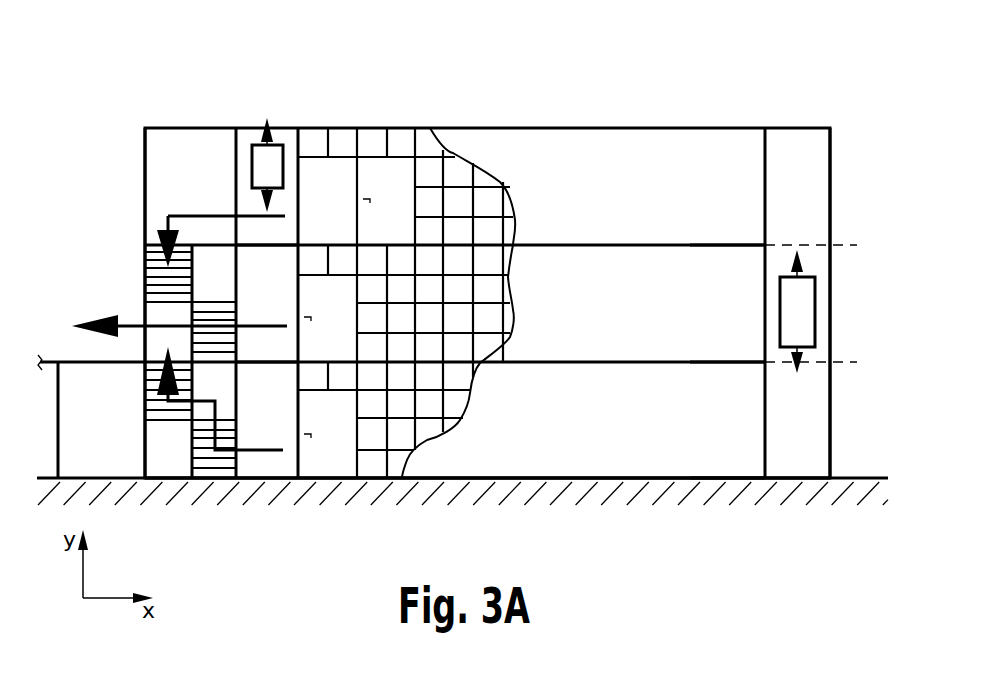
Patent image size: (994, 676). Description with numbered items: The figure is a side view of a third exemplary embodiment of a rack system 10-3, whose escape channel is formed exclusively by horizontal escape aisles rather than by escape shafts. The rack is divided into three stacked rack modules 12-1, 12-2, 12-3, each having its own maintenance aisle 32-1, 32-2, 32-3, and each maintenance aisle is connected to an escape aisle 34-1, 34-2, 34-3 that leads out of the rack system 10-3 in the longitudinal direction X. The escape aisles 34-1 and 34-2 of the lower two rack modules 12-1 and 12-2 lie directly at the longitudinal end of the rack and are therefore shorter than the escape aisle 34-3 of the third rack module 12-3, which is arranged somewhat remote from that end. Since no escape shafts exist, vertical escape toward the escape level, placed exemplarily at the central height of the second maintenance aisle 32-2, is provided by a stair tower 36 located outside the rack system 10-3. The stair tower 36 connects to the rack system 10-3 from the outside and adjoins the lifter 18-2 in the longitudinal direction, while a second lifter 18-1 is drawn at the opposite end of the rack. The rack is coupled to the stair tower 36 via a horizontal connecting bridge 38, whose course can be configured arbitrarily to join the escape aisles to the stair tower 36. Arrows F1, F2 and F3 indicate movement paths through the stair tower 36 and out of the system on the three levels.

The rack system 10-3 is at (126, 92).
The stair tower 36 is at (145, 168).
The lifter 18-2 is at (245, 128).
The lifter 18-1 is at (793, 128).
The connecting bridge 38 is at (267, 247).
The escape aisle 34-3 is at (324, 165).
The escape aisle 34-2 is at (350, 335).
The escape aisle 34-1 is at (332, 467).
The rack module 12-3 is at (862, 131).
The rack module 12-2 is at (862, 250).
The rack module 12-1 is at (862, 366).
The maintenance aisle 32-3 is at (748, 238).
The maintenance aisle 32-2 is at (748, 351).
The maintenance aisle 32-1 is at (748, 467).
The third flow path F3 is at (194, 216).
The second flow path F2 is at (118, 324).
The first flow path F1 is at (263, 480).